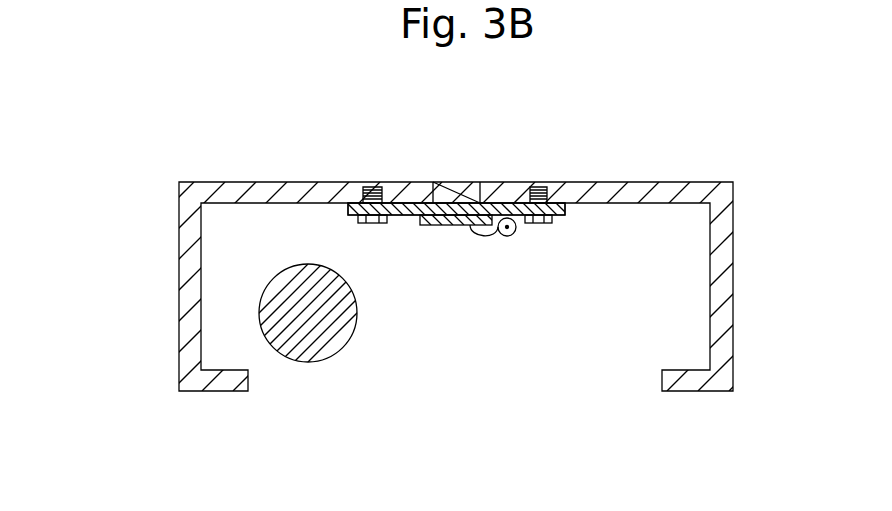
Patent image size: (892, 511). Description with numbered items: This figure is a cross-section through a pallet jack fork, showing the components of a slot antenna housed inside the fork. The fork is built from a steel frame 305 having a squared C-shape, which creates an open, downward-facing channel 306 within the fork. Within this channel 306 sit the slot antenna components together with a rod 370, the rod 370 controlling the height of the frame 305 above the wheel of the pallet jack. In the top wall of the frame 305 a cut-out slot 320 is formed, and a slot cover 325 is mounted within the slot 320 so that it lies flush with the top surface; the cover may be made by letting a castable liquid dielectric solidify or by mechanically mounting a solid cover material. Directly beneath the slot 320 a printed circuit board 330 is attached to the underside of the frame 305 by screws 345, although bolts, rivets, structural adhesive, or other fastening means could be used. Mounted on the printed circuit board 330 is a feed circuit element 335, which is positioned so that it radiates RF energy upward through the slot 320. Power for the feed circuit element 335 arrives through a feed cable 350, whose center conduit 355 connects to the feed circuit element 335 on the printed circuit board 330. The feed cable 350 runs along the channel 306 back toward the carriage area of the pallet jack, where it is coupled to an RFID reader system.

The steel frame 305 is at (170, 237).
The channel 306 is at (462, 396).
The cut-out slot 320 is at (483, 148).
The slot cover 325 is at (451, 172).
The printed circuit board 330 is at (405, 216).
The feed circuit element 335 is at (437, 226).
The screws 345 is at (365, 222).
The feed cable 350 is at (510, 229).
The center conduit 355 is at (481, 235).
The rod 370 is at (355, 320).